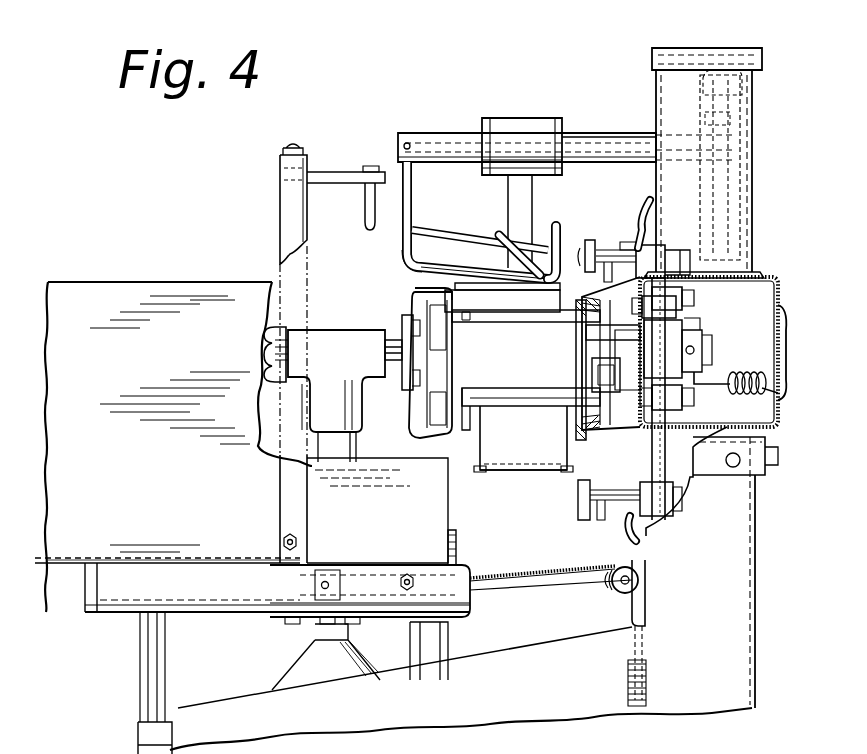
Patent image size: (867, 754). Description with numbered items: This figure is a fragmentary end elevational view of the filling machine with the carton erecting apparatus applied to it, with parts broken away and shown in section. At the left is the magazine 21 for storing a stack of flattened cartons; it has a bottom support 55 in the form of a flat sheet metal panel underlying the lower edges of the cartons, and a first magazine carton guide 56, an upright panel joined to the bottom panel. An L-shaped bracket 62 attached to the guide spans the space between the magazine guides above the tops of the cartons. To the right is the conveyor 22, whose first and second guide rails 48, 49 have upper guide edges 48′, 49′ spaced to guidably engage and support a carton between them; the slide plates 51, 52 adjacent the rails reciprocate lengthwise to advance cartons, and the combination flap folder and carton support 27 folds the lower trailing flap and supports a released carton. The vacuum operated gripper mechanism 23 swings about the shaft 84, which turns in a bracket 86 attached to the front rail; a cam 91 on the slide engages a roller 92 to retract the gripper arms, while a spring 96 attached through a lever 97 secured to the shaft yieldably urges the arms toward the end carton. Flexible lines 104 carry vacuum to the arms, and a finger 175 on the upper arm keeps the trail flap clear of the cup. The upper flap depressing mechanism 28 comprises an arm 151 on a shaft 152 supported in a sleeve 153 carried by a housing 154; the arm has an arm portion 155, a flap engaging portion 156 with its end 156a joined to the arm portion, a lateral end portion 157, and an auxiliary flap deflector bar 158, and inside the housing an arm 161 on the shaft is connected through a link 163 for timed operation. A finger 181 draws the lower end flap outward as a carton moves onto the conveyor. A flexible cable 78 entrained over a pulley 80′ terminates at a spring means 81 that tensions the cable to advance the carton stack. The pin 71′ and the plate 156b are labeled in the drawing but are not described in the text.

The magazine 21 is at (114, 280).
The first magazine carton guide 56 is at (188, 292).
The bottom support 55 is at (85, 562).
The L-shaped bracket 62 is at (280, 197).
The pin 71′ is at (366, 208).
The arm 151 is at (395, 166).
The sleeve 153 is at (458, 133).
The shaft 152 is at (596, 148).
The housing 154 is at (652, 73).
The arm 161 is at (748, 112).
The link 163 is at (710, 196).
The upper flap depressing mechanism 28 is at (398, 240).
The arm portion 155 is at (416, 205).
The flap engaging portion 156 is at (432, 283).
The end of flap engaging portion 156a is at (408, 272).
The mounting plate 156b is at (552, 296).
The lateral end portion 157 is at (560, 232).
The auxiliary flap deflector bar 158 is at (440, 236).
The second guide rail 49 is at (420, 291).
The slide plate 52 is at (446, 378).
The upper guide edge 49′ is at (475, 318).
The combination flap folder and carton support 27 is at (520, 478).
The upper guide edge 48′ is at (566, 308).
The cam 91 is at (595, 333).
The slide plate 51 is at (600, 386).
The first guide rail 48 is at (643, 263).
The finger 175 is at (584, 248).
The vacuum operated gripper mechanism 23 is at (596, 240).
The flexible lines 104 is at (638, 206).
The conveyor 22 is at (590, 430).
The shaft 84 is at (656, 446).
The roller 92 is at (654, 307).
The bracket 86 is at (676, 300).
The lever 97 is at (705, 380).
The spring 96 is at (745, 378).
The pulley 80′ is at (326, 575).
The finger 181 is at (454, 558).
The flexible cable 78 is at (526, 578).
The spring means 81 is at (646, 658).